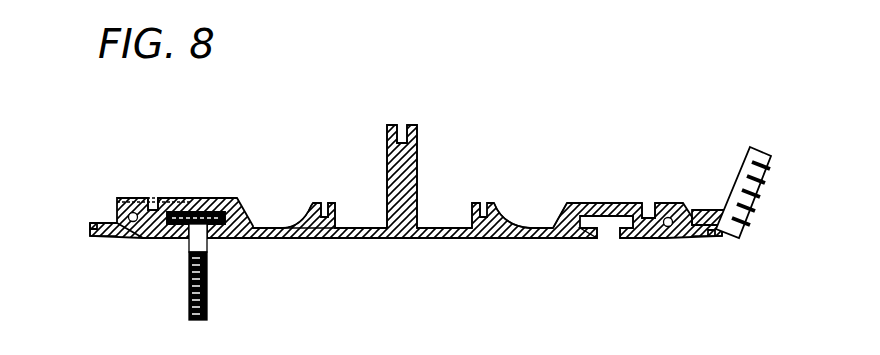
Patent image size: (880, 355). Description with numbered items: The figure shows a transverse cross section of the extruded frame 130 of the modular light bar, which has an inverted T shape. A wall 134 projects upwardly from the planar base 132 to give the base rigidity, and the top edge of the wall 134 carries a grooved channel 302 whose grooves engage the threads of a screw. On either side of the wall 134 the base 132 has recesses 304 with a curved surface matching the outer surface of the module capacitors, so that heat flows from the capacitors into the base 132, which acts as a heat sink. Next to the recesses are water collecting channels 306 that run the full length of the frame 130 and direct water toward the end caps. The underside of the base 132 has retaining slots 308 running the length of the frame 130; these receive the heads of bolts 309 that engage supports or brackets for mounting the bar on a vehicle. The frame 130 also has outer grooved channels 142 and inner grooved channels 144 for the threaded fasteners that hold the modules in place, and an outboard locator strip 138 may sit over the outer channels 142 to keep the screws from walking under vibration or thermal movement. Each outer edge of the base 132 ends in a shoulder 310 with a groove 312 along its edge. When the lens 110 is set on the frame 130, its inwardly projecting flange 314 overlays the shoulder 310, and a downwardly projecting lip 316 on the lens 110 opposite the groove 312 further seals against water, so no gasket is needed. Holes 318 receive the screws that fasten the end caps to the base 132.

The lens 110 is at (760, 187).
The extruded frame 130 is at (598, 148).
The planar base 132 is at (365, 240).
The wall 134 is at (418, 200).
The outboard locator strip 138 is at (137, 199).
The outer grooved channels 142 is at (153, 209).
The inner grooved channels 144 is at (323, 214).
The grooved channel 302 is at (401, 133).
The recesses 304 is at (266, 228).
The water collecting channels 306 is at (361, 228).
The retaining slots 308 is at (207, 243).
The bolts 309 is at (208, 300).
The shoulder 310 is at (97, 240).
The groove 312 is at (89, 225).
The inwardly projecting flange 314 is at (716, 207).
The downwardly projecting lip 316 is at (737, 228).
The holes 318 is at (132, 222).